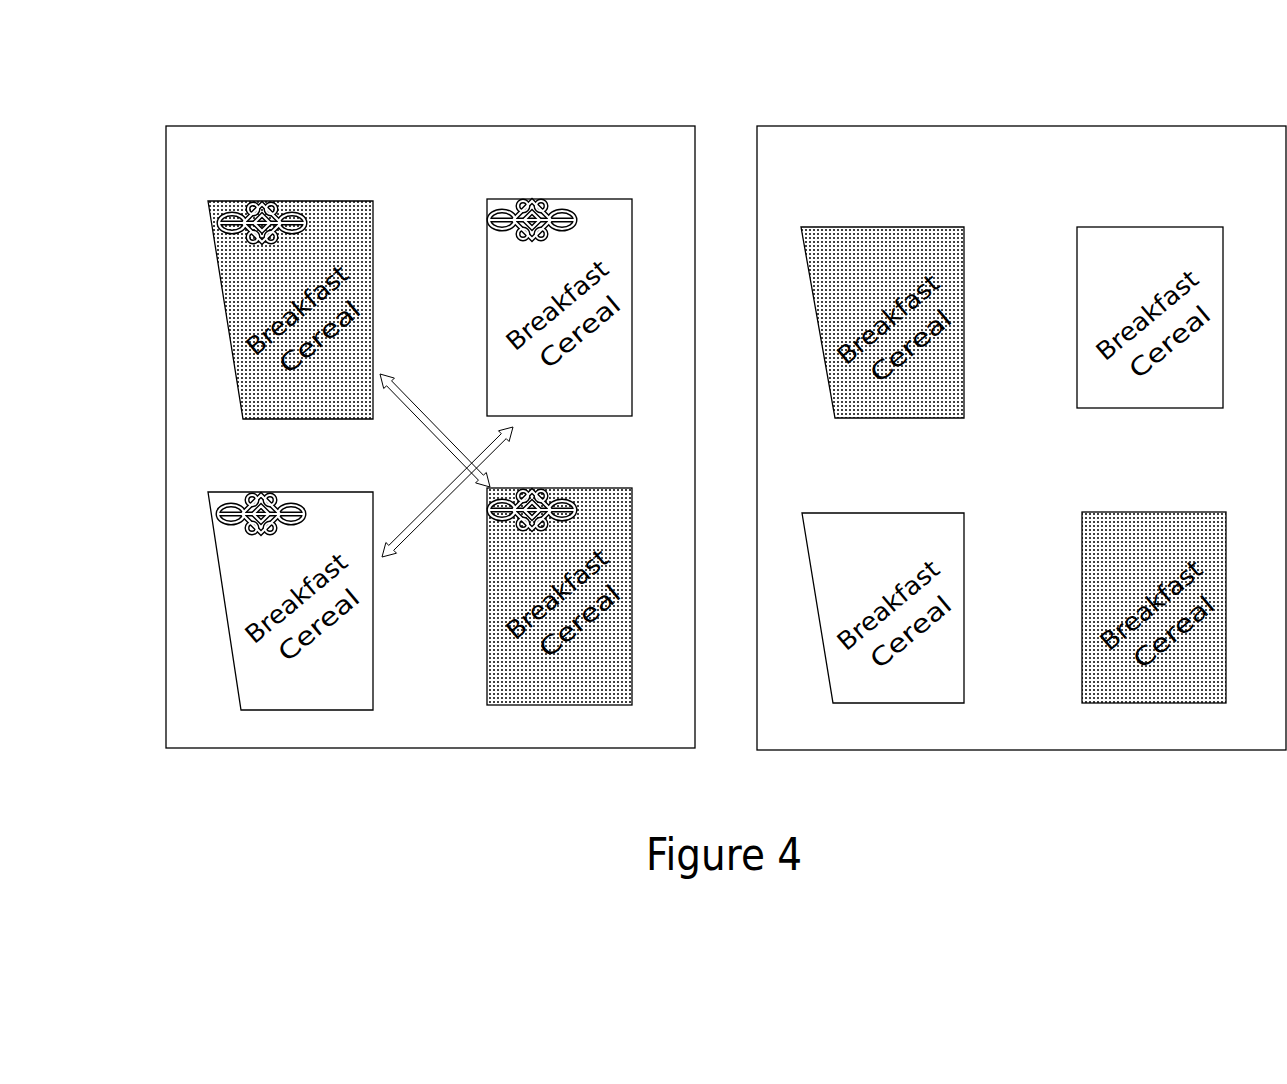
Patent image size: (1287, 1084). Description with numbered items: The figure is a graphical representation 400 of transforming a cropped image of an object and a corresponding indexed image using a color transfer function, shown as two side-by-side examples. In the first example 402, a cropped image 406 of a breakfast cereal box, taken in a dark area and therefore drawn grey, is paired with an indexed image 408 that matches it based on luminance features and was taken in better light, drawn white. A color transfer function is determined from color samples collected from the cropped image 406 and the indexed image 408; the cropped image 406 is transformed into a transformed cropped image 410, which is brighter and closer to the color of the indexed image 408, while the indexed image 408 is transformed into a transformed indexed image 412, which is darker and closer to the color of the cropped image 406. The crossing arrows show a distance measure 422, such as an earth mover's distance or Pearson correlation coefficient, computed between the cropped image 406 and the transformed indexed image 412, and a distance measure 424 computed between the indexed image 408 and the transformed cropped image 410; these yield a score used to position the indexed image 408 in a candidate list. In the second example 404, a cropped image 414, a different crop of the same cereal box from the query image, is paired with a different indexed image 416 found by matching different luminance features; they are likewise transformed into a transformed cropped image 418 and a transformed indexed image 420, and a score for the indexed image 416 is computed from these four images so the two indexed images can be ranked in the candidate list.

The graphical representation 400 is at (203, 93).
The first example 402 is at (497, 126).
The second example 404 is at (1022, 126).
The cropped image 406 is at (330, 201).
The indexed image 408 is at (587, 199).
The transformed cropped image 410 is at (349, 492).
The transformed indexed image 412 is at (596, 488).
The cropped image 414 is at (883, 227).
The indexed image 416 is at (1146, 227).
The transformed cropped image 418 is at (888, 513).
The transformed indexed image 420 is at (1146, 512).
The distance measure 422 is at (418, 405).
The distance measure 424 is at (438, 512).